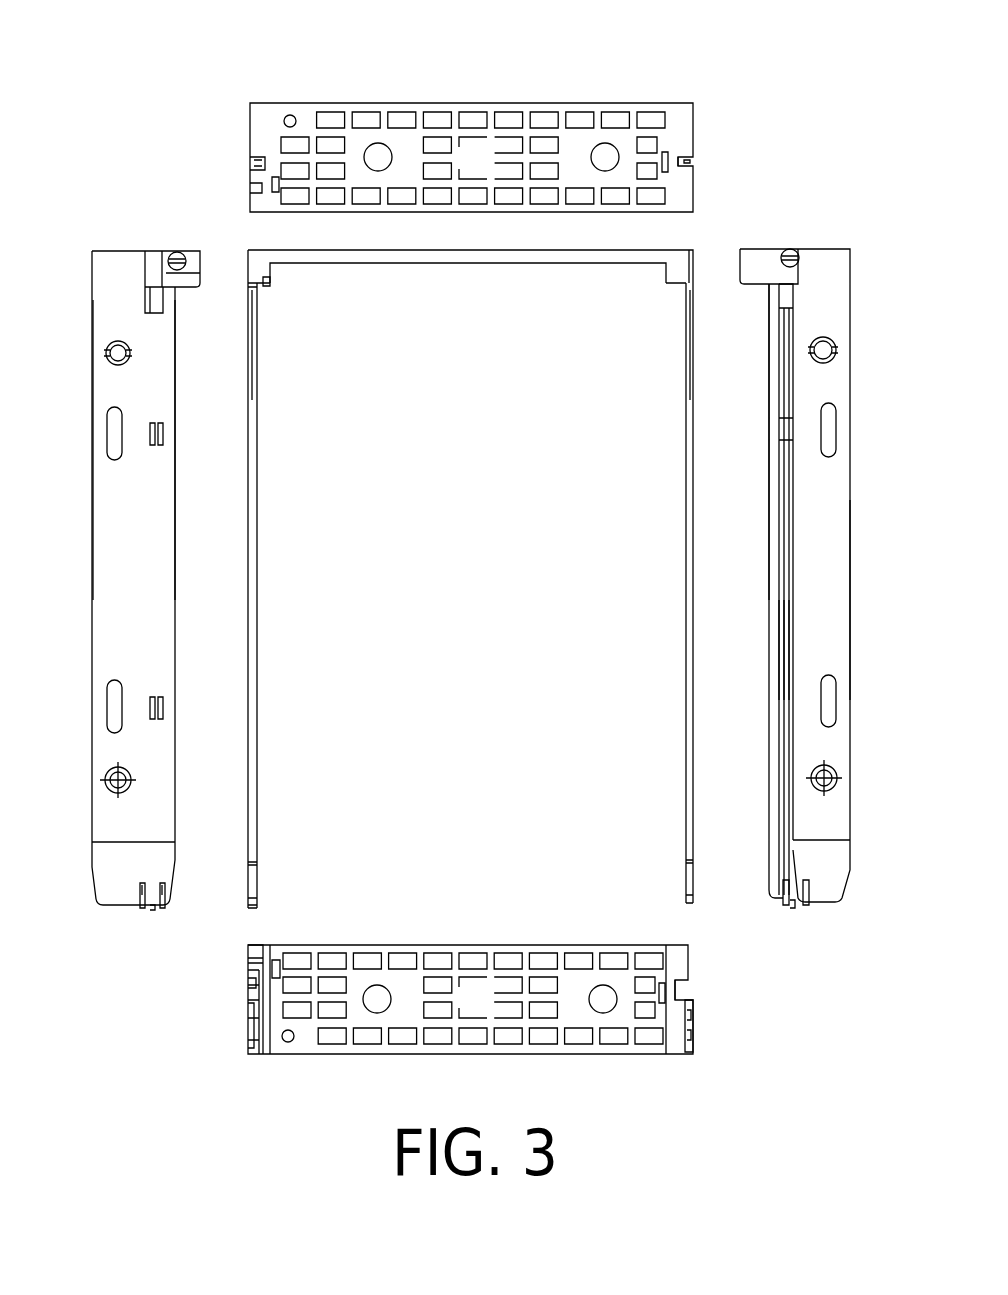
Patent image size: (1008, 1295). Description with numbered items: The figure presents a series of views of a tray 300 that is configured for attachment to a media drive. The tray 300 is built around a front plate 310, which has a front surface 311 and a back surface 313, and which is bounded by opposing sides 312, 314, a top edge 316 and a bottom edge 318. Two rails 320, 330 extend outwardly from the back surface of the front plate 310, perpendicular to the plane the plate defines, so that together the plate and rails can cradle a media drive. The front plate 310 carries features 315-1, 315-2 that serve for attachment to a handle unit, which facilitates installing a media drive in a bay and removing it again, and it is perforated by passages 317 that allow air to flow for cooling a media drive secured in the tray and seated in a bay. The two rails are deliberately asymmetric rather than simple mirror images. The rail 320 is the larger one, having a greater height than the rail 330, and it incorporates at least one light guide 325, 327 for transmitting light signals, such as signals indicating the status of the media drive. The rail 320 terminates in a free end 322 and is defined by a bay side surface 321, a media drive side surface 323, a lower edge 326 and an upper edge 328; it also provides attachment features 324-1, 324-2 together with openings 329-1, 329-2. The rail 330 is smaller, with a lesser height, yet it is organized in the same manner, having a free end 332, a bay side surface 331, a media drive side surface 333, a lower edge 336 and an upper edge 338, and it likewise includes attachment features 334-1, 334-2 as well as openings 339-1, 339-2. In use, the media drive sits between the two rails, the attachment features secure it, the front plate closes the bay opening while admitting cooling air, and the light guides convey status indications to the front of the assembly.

The tray 300 is at (183, 38).
The front plate 310 is at (255, 106).
The front surface 311 is at (500, 169).
The side 312 is at (250, 130).
The back surface 313 is at (510, 264).
The side 314 is at (694, 147).
The feature 315-1 is at (380, 150).
The feature 315-2 is at (603, 150).
The top edge 316 is at (352, 103).
The passage 317 is at (657, 105).
The bottom edge 318 is at (355, 212).
The rail 320 is at (120, 250).
The bay side surface 321 is at (258, 380).
The free end 322 is at (257, 906).
The media drive side surface 323 is at (258, 372).
The attachment feature 324-1 is at (120, 355).
The attachment feature 324-2 is at (120, 785).
The light guide 325 is at (142, 900).
The lower edge 326 is at (93, 625).
The light guide 327 is at (162, 908).
The upper edge 328 is at (177, 625).
The opening 329-1 is at (115, 445).
The opening 329-2 is at (115, 717).
The rail 330 is at (805, 249).
The bay side surface 331 is at (687, 375).
The free end 332 is at (686, 896).
The media drive side surface 333 is at (686, 372).
The attachment feature 334-1 is at (823, 352).
The attachment feature 334-2 is at (824, 780).
The lower edge 336 is at (850, 643).
The upper edge 338 is at (795, 585).
The opening 339-1 is at (828, 445).
The opening 339-2 is at (828, 710).